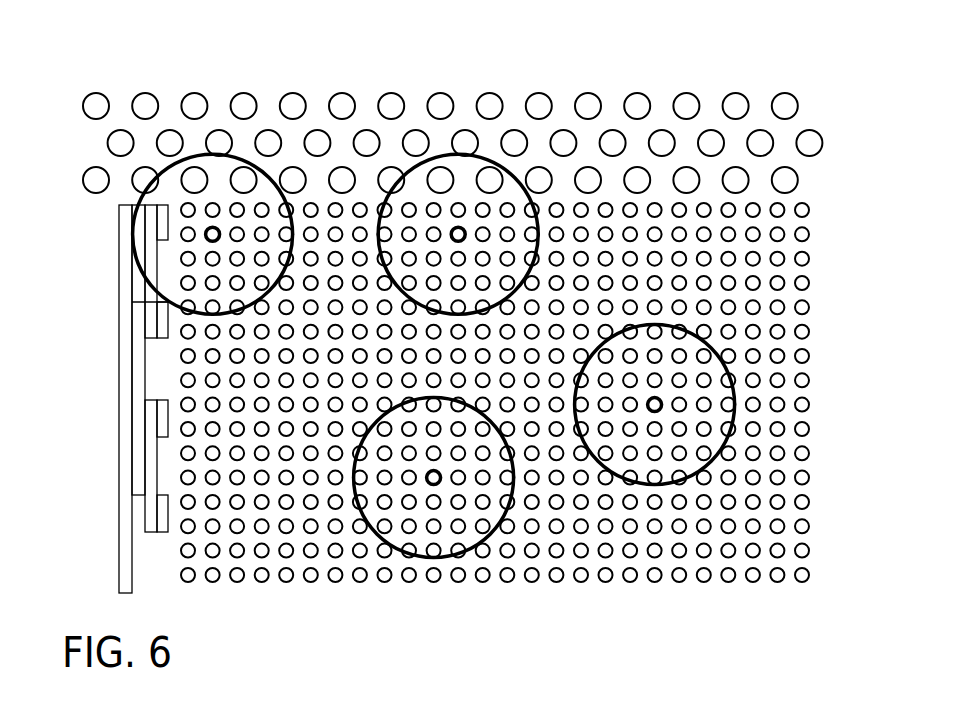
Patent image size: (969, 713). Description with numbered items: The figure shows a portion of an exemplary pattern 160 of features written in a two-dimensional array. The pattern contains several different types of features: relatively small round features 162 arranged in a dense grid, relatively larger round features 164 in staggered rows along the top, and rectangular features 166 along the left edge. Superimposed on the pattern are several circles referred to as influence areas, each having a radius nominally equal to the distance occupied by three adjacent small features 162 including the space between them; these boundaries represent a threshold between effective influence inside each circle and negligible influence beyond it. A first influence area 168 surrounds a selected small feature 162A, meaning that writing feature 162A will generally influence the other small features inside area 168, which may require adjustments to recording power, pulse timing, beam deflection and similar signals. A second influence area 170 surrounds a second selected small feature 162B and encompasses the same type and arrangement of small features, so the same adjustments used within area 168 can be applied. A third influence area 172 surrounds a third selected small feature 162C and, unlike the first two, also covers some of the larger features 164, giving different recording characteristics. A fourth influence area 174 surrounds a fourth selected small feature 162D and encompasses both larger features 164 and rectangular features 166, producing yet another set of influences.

The pattern 160 is at (175, 37).
The small round features 162 is at (730, 582).
The first selected small feature 162A is at (428, 481).
The second selected small feature 162B is at (646, 406).
The third selected small feature 162C is at (214, 228).
The fourth selected small feature 162D is at (459, 228).
The larger round features 164 is at (734, 94).
The rectangular features 166 is at (118, 294).
The first influence area 168 is at (429, 556).
The second influence area 170 is at (662, 486).
The third influence area 172 is at (512, 172).
The fourth influence area 174 is at (166, 168).